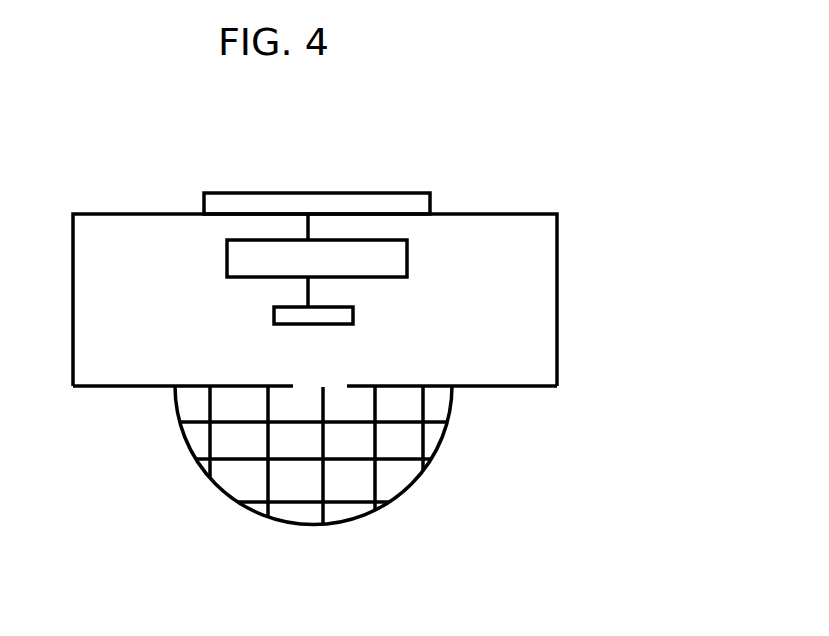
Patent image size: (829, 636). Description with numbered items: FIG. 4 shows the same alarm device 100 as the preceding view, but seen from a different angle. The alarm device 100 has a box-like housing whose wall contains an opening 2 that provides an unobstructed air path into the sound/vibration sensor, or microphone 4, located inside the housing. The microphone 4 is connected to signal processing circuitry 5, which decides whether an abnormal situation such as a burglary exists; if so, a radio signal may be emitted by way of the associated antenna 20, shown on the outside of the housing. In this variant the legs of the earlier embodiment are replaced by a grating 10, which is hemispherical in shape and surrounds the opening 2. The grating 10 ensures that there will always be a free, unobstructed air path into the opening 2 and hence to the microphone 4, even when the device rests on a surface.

The alarm device 100 is at (563, 193).
The antenna 20 is at (398, 182).
The signal processing circuitry 5 is at (407, 263).
The microphone 4 is at (353, 315).
The opening 2 is at (310, 377).
The grating 10 is at (333, 503).